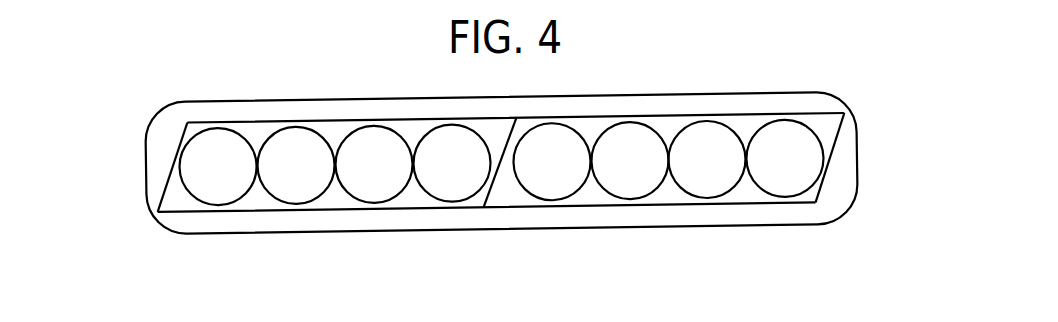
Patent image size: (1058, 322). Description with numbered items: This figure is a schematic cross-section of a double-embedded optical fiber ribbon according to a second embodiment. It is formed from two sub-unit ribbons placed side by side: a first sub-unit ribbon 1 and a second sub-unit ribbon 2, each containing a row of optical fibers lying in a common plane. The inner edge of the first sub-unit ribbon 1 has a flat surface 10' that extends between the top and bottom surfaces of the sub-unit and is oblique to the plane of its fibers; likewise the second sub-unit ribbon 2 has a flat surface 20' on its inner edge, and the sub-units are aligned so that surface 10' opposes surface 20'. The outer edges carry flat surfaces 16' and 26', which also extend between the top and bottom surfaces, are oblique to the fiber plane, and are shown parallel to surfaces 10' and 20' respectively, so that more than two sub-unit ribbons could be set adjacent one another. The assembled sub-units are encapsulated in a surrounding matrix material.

The first sub-unit ribbon 1 is at (172, 207).
The second sub-unit ribbon 2 is at (637, 206).
The flat surface 10' is at (348, 210).
The flat surface 20' is at (666, 211).
The flat surface 16' is at (126, 167).
The flat surface 26' is at (875, 157).